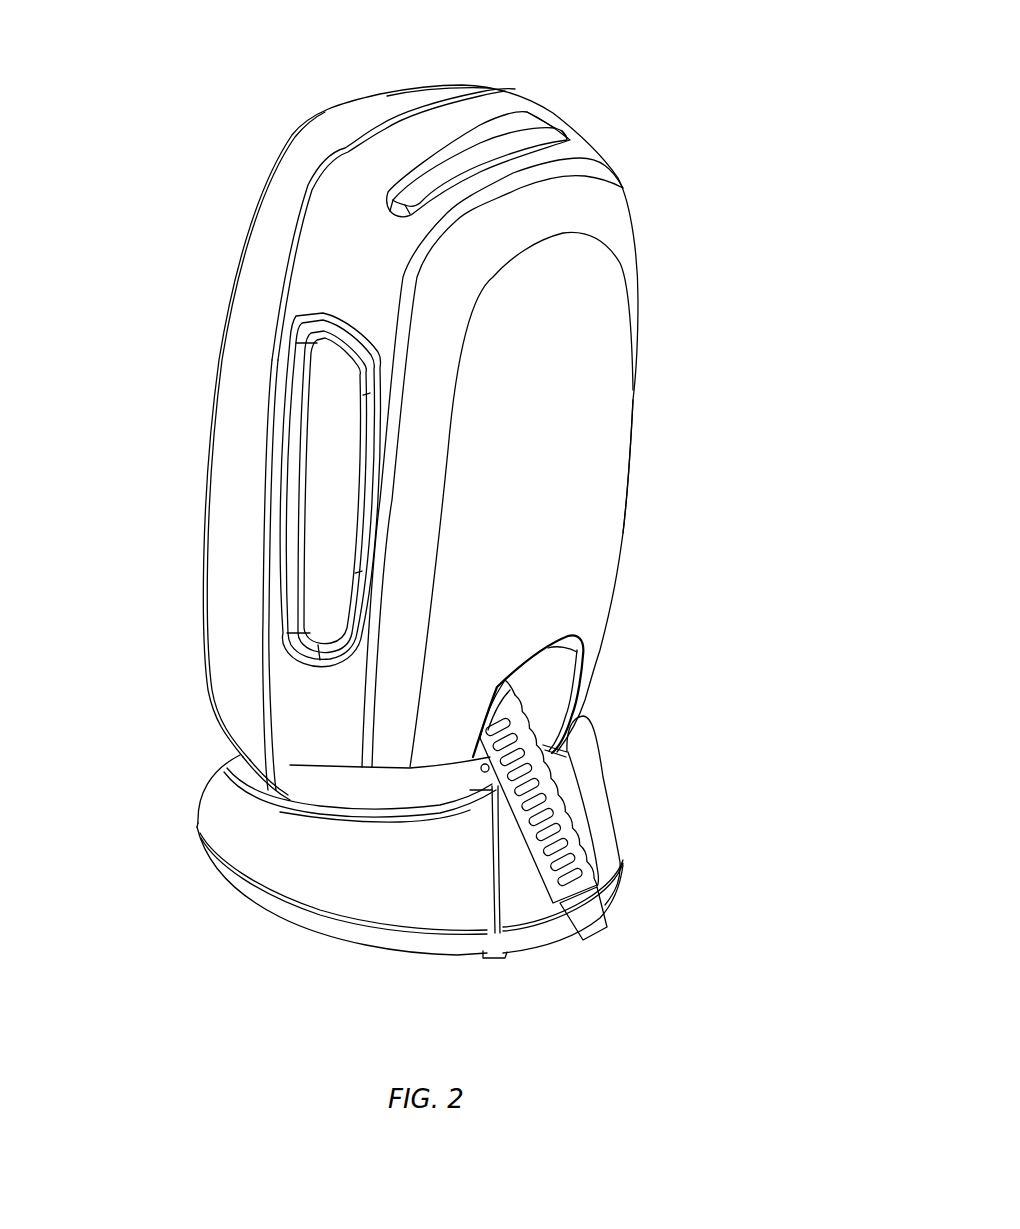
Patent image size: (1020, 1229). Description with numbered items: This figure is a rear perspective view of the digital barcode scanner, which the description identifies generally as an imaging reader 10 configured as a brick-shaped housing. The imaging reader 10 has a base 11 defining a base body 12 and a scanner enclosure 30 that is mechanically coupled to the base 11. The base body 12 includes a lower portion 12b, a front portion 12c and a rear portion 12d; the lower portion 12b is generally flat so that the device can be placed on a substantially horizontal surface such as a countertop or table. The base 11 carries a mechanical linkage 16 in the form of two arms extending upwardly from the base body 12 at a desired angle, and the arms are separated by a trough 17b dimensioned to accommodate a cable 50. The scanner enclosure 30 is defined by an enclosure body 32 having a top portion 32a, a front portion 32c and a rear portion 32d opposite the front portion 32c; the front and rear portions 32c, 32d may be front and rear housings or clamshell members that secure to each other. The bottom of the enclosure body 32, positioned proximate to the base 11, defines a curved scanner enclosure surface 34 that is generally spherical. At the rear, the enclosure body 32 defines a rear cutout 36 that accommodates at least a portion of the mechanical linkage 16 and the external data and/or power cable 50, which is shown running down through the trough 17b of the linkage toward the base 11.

The imaging reader 10 is at (717, 240).
The base 11 is at (323, 893).
The base body 12 is at (222, 832).
The lower portion 12b is at (357, 943).
The front portion 12c is at (202, 787).
The rear portion 12d is at (513, 890).
The mechanical linkage 16 is at (563, 785).
The trough 17b is at (567, 803).
The scanner enclosure 30 is at (607, 207).
The enclosure body 32 is at (620, 243).
The top portion 32a is at (414, 75).
The front portion 32c is at (177, 400).
The rear portion 32d is at (658, 361).
The curved scanner enclosure surface 34 is at (333, 803).
The rear cutout 36 is at (547, 675).
The cable 50 is at (594, 925).